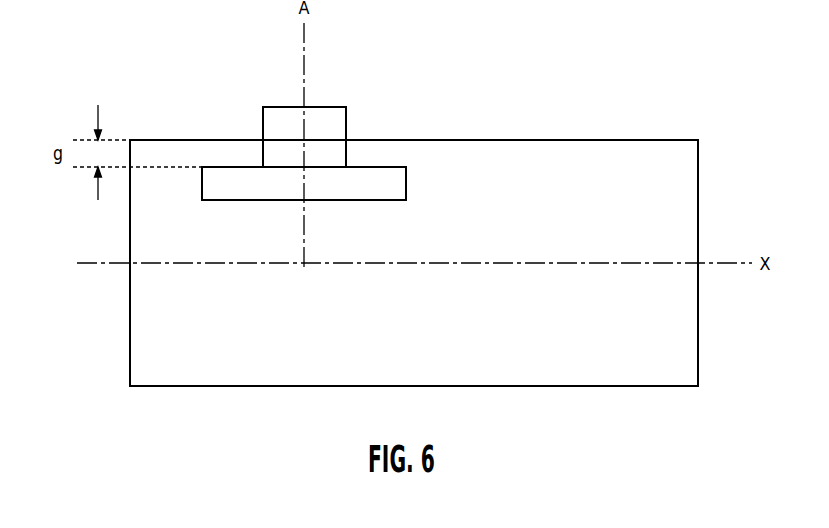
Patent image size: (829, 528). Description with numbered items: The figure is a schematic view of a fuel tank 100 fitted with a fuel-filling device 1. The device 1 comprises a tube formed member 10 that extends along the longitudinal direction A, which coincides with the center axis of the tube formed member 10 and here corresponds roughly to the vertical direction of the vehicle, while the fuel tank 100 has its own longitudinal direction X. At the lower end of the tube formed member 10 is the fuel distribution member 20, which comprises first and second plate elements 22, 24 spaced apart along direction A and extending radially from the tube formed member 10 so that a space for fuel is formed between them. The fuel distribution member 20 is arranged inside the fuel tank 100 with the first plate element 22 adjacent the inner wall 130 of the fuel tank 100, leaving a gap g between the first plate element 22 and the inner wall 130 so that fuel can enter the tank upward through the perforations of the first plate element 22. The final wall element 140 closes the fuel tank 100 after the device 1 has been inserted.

The device 1 is at (267, 84).
The tube formed member 10 is at (317, 107).
The fuel distribution member 20 is at (261, 203).
The first plate element 22 is at (383, 167).
The second plate element 24 is at (349, 200).
The fuel tank 100 is at (539, 104).
The inner wall 130 is at (445, 143).
The final wall element 140 is at (130, 317).